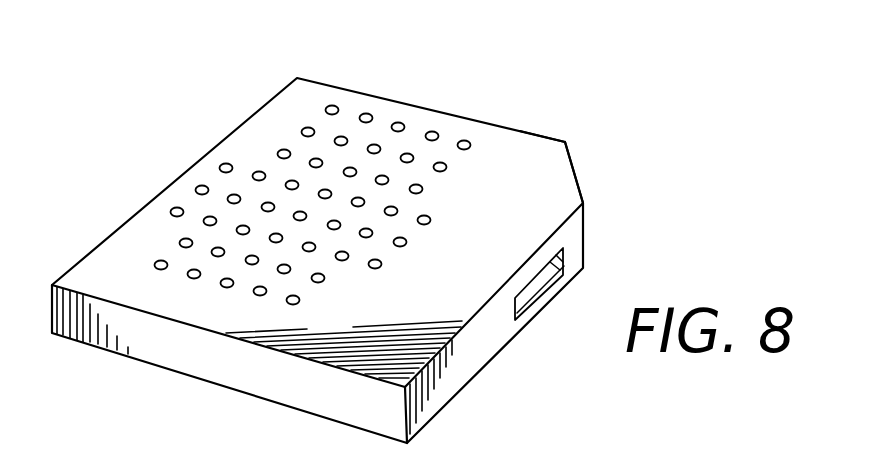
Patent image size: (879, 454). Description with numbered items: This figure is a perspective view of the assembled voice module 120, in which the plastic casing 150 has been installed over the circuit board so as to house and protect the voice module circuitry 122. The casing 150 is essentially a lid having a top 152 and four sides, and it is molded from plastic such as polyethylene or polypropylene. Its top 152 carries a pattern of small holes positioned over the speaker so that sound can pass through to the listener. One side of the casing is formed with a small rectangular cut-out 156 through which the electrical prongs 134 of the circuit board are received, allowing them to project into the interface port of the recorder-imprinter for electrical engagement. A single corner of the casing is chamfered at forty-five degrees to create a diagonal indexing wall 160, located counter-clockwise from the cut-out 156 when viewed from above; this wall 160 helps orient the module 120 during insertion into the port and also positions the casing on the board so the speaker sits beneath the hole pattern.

The voice module 120 is at (190, 160).
The plastic casing 150 is at (456, 112).
The top 152 is at (532, 165).
The diagonal indexing wall 160 is at (575, 176).
The voice module circuitry 122 is at (530, 328).
The electrical prongs 134 is at (548, 306).
The rectangular cut-out 156 is at (566, 266).